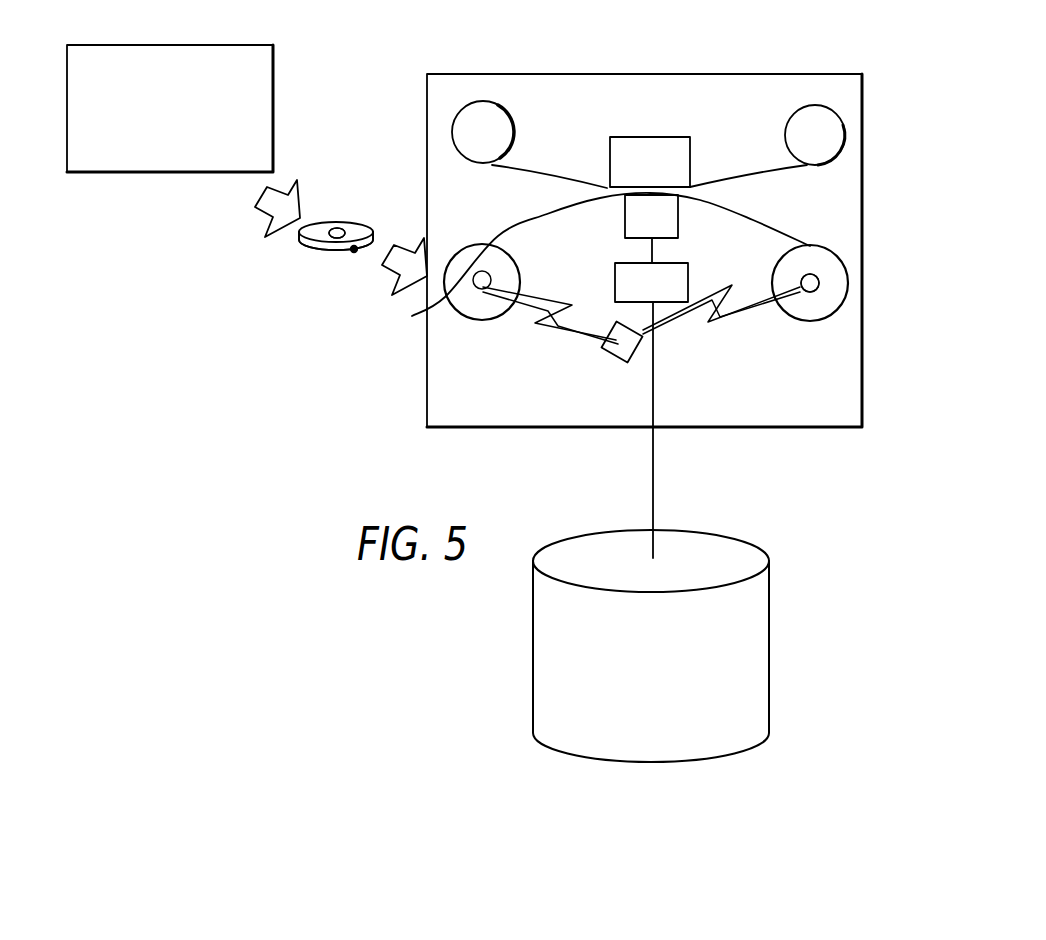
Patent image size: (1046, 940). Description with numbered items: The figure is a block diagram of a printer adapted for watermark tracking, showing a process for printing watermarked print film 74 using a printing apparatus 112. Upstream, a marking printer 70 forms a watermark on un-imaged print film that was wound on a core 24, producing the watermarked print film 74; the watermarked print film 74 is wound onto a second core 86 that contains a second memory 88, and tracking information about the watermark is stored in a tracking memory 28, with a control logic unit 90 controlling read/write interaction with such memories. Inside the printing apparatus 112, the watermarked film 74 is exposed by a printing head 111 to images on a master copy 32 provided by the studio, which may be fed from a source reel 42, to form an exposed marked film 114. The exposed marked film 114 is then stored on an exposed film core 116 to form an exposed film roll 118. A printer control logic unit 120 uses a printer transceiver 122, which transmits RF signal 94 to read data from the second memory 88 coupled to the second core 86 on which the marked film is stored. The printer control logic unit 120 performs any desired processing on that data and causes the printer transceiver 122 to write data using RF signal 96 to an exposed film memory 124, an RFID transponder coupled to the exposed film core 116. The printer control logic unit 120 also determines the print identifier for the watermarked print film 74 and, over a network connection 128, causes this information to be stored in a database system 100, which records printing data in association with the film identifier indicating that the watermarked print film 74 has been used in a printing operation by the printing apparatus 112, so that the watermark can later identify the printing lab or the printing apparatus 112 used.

The core 24 is at (477, 273).
The tracking memory 28 is at (352, 252).
The master copy 32 is at (546, 176).
The source reel 42 is at (483, 102).
The marking printer 70 is at (273, 80).
The watermarked print film 74 is at (333, 221).
The second core 86 is at (310, 247).
The second memory 88 is at (347, 232).
The control logic unit 90 is at (337, 264).
The RF signal 94 is at (552, 328).
The RF signal 96 is at (750, 300).
The database system 100 is at (769, 607).
The printing head 111 is at (676, 137).
The printing apparatus 112 is at (648, 70).
The exposed marked film 114 is at (781, 227).
The exposed film core 116 is at (822, 282).
The exposed film roll 118 is at (838, 235).
The printer control logic unit 120 is at (616, 267).
The printer transceiver 122 is at (608, 352).
The exposed film memory 124 is at (821, 297).
The network connection 128 is at (653, 480).